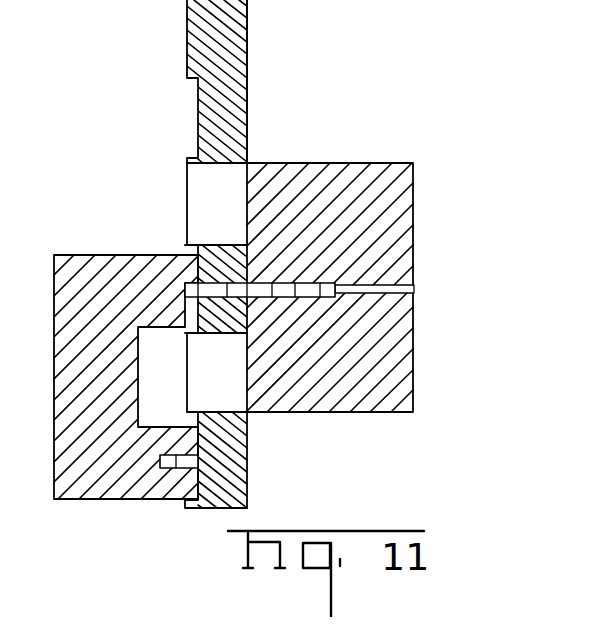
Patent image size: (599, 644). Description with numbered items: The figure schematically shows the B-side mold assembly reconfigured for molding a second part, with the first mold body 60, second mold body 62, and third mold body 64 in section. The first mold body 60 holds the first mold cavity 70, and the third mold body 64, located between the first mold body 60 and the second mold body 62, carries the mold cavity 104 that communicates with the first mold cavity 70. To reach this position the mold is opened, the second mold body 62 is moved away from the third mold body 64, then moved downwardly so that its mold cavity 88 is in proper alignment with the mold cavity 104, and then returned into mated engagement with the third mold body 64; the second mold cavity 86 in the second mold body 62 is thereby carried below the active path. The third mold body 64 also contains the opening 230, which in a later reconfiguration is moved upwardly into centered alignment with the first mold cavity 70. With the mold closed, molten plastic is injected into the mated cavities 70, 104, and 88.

The third mold body 64 is at (235, 35).
The first mold body 60 is at (343, 162).
The second mold body 62 is at (88, 255).
The mold cavity 88 is at (183, 280).
The mold cavity 104 is at (242, 283).
The first mold cavity 70 is at (284, 285).
The opening 230 is at (217, 377).
The mold cavity 86 is at (192, 463).